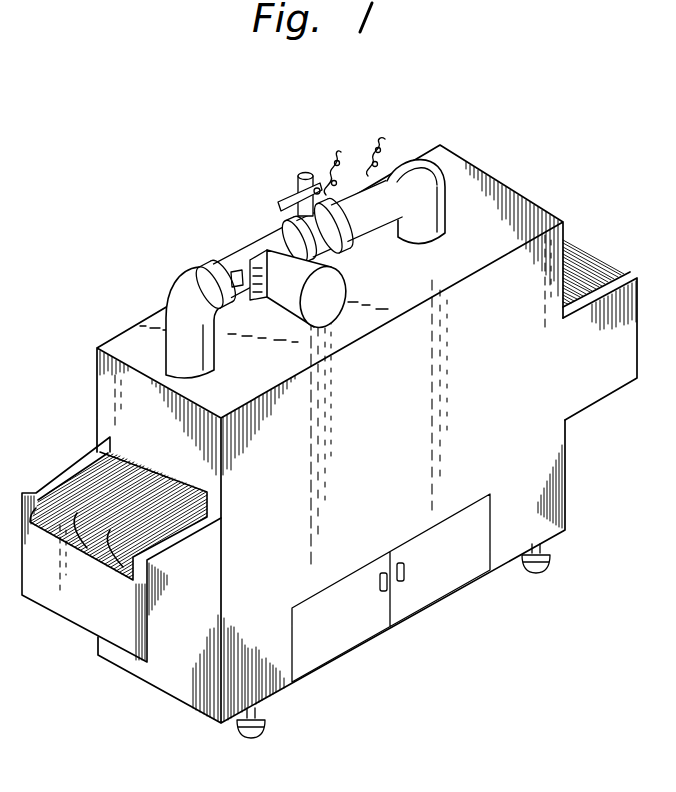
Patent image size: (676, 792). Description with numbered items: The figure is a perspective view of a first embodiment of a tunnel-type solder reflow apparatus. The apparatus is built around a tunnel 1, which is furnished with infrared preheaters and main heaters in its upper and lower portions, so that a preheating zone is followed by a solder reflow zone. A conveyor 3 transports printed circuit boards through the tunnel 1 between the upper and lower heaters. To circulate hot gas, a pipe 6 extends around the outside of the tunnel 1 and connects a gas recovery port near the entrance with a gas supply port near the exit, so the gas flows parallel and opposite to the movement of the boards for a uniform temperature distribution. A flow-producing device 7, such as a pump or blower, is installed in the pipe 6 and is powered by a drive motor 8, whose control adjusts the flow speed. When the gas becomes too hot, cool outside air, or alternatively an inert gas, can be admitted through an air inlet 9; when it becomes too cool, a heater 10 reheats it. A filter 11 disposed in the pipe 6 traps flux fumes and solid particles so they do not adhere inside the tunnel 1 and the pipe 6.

The tunnel 1 is at (110, 440).
The conveyor 3 is at (582, 244).
The pipe 6 is at (170, 302).
The flow-producing device 7 is at (263, 236).
The drive motor 8 is at (347, 285).
The air inlet 9 is at (300, 180).
The heater 10 is at (385, 226).
The filter 11 is at (213, 263).